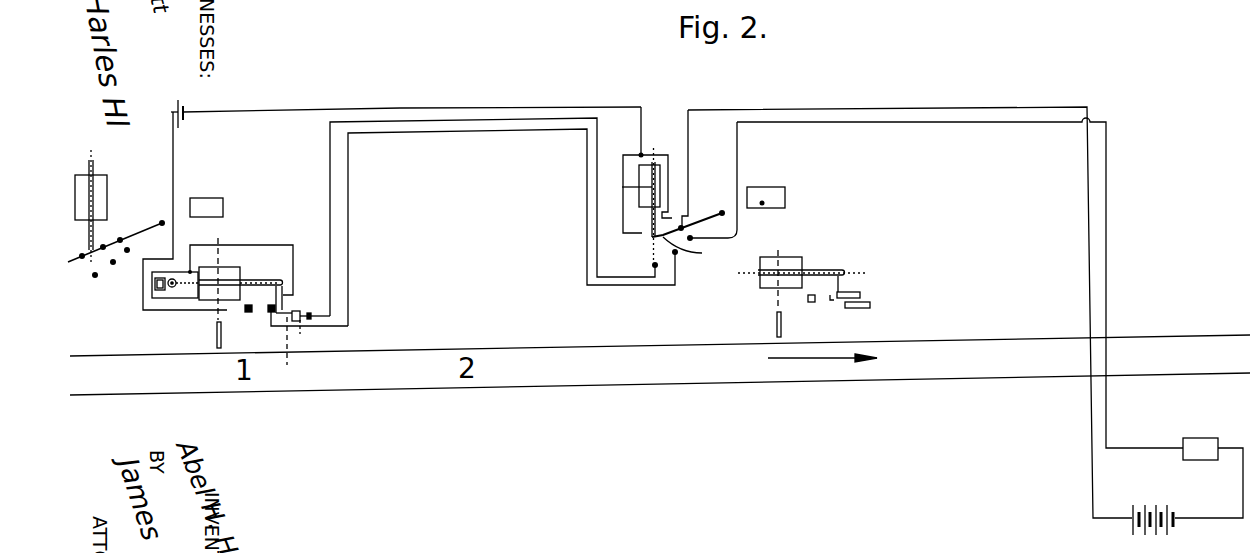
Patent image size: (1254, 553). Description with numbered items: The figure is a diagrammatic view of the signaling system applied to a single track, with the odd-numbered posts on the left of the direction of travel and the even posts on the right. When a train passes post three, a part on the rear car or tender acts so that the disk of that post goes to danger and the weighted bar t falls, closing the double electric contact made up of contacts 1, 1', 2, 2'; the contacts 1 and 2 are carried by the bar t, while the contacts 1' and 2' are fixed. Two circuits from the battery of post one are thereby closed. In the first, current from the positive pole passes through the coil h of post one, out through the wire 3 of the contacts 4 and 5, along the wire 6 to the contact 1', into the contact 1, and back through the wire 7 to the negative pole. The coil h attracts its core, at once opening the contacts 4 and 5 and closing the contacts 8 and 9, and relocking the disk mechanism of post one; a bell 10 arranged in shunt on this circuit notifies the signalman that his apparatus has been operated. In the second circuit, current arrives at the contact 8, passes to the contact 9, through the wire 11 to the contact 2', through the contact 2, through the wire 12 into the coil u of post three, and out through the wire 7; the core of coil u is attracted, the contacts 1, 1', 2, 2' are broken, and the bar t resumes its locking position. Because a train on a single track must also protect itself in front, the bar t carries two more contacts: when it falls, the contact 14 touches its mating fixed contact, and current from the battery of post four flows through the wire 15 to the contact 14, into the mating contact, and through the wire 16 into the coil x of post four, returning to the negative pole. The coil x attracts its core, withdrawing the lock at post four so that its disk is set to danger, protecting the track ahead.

The contact 1 is at (671, 244).
The contact 1' is at (652, 288).
The contact 2 is at (689, 257).
The contact 2' is at (686, 266).
The wire 3 is at (250, 245).
The contact 4 is at (300, 366).
The contact 5 is at (303, 321).
The wire 6 is at (335, 222).
The wire 7 is at (641, 122).
The contact 8 is at (248, 312).
The contact 9 is at (270, 312).
The bell 10 is at (152, 292).
The wire 11 is at (349, 255).
The wire 12 is at (670, 185).
The contact 14 is at (683, 224).
The wire 15 is at (1090, 270).
The wire 16 is at (973, 123).
The coil h is at (219, 294).
The coil u is at (627, 187).
The bar t is at (719, 225).
The coil x is at (213, 203).